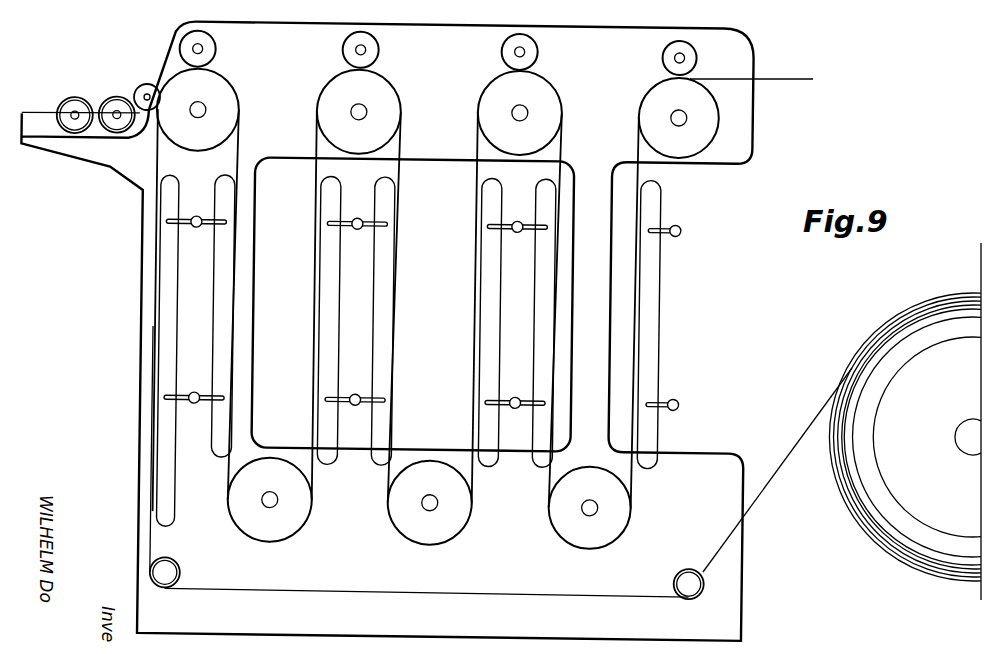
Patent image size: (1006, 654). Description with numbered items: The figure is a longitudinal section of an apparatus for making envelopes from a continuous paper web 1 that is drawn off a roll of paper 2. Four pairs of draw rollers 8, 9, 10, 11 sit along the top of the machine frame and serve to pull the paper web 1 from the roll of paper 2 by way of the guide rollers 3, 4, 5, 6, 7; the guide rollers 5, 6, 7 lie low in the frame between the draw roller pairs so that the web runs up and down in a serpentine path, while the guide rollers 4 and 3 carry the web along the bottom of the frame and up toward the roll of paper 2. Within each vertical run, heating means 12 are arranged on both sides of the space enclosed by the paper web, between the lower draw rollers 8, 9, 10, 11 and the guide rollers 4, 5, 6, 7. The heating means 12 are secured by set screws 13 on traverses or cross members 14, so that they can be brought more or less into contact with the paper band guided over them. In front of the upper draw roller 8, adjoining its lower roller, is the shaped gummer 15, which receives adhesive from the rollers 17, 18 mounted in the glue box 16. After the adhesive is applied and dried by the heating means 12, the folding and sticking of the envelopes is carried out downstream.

The paper web 1 is at (786, 459).
The roll of paper 2 is at (852, 492).
The guide roller 3 is at (691, 572).
The guide roller 4 is at (175, 570).
The guide roller 5 is at (276, 534).
The guide roller 6 is at (435, 535).
The guide roller 7 is at (598, 535).
The pair of draw rollers 8 is at (212, 83).
The pair of draw rollers 9 is at (375, 81).
The pair of draw rollers 10 is at (542, 89).
The pair of draw rollers 11 is at (655, 92).
The heating means 12 is at (212, 288).
The set screws 13 is at (182, 221).
The traverses or cross members 14 is at (193, 232).
The shaped gummer 15 is at (143, 89).
The glue box 16 is at (31, 121).
The roller 17 is at (69, 101).
The roller 18 is at (110, 101).